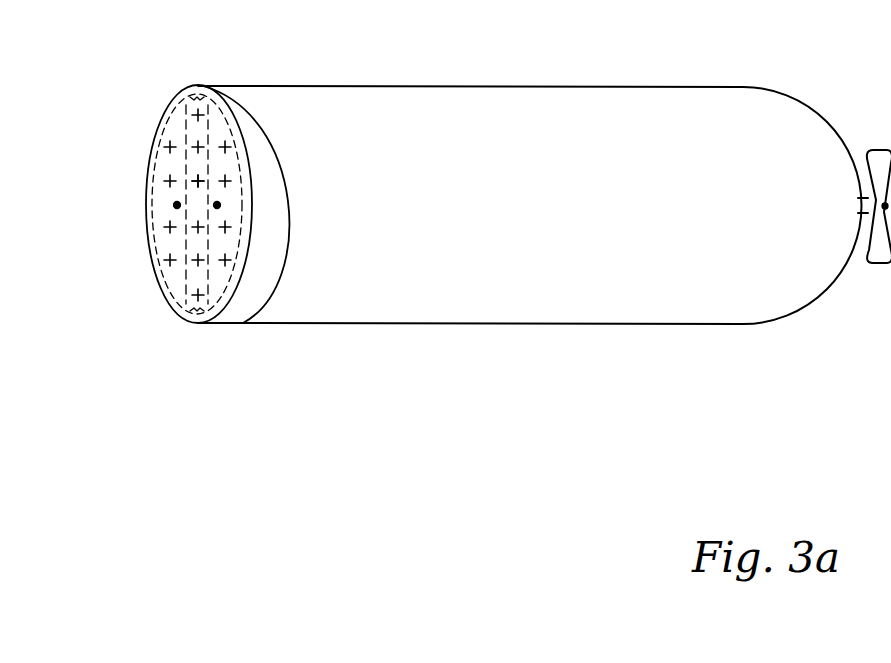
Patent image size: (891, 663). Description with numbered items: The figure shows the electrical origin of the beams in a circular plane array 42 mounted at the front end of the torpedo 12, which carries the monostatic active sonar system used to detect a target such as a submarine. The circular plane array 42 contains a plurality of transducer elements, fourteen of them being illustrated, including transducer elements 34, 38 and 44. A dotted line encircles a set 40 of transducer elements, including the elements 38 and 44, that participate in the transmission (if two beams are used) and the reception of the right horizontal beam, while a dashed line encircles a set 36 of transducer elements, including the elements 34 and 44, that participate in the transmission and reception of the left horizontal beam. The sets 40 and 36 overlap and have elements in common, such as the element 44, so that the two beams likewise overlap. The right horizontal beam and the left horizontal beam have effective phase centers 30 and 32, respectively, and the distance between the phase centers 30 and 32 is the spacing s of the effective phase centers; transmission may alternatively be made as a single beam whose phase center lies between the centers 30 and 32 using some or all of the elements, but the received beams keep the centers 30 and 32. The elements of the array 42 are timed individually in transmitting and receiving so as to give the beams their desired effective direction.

The torpedo 12 is at (525, 86).
The effective phase center 30 is at (175, 205).
The effective phase center 32 is at (219, 205).
The transducer element 34 is at (223, 141).
The set of transducer elements 36 is at (235, 147).
The transducer element 38 is at (163, 147).
The set of transducer elements 40 is at (161, 146).
The circular plane array 42 is at (187, 85).
The transducer element 44 is at (193, 183).